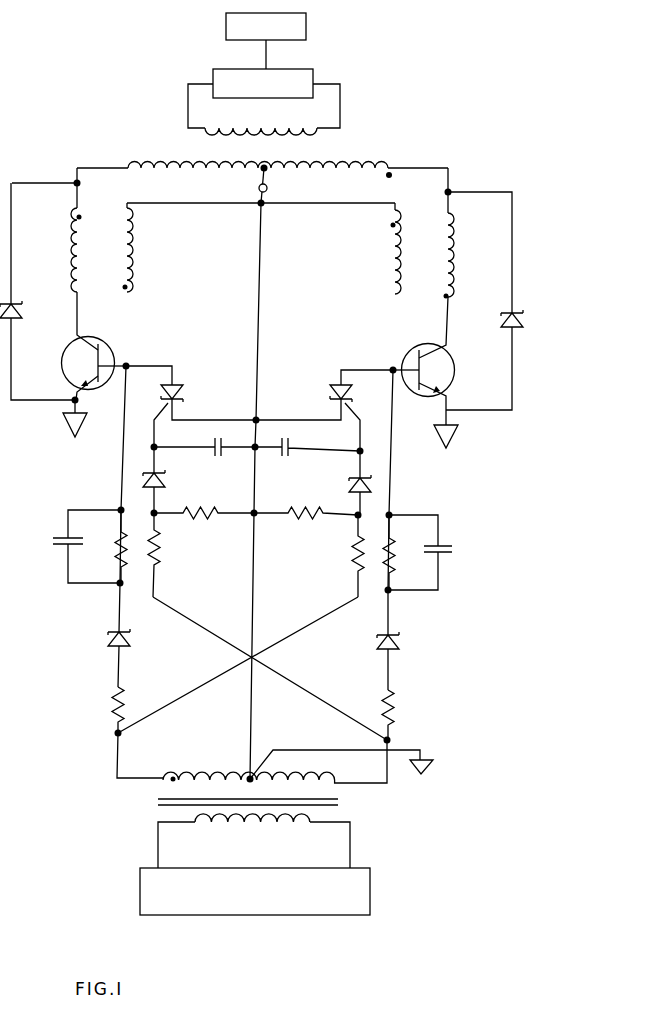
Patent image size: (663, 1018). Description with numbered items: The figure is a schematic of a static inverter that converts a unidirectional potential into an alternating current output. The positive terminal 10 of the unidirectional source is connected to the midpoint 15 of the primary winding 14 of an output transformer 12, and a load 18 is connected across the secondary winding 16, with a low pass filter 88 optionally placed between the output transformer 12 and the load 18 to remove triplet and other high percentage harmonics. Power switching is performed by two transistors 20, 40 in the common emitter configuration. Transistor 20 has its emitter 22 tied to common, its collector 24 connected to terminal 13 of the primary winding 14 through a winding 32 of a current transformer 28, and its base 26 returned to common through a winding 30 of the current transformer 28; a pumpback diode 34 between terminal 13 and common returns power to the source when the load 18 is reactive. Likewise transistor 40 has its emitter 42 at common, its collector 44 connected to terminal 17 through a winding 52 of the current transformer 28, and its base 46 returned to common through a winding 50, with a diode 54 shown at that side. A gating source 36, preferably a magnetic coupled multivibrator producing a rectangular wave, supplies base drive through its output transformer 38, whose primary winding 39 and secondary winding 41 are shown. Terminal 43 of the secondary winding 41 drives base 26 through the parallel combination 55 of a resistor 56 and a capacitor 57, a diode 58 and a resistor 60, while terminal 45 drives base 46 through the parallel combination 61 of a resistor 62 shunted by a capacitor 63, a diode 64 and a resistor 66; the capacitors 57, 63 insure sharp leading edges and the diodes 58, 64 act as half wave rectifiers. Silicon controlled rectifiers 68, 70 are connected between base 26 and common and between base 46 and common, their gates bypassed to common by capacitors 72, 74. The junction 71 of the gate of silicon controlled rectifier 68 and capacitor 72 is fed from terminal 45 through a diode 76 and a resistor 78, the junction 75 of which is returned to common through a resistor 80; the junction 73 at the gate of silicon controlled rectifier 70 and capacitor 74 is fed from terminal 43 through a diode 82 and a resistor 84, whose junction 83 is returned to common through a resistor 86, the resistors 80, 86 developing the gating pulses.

The positive terminal 10 is at (247, 185).
The output transformer 12 is at (262, 156).
The terminal of primary winding 13 is at (128, 163).
The primary winding 14 is at (185, 162).
The midpoint 15 is at (268, 164).
The secondary winding 16 is at (243, 126).
The terminal of primary winding 17 is at (393, 171).
The load 18 is at (306, 30).
The transistor 20 is at (93, 364).
The emitter 22 is at (80, 392).
The collector 24 is at (90, 345).
The base 26 is at (110, 360).
The current transformer 28 is at (261, 233).
The winding 30 is at (133, 242).
The winding 32 is at (70, 236).
The diode 34 is at (22, 312).
The gating source 36 is at (368, 888).
The output transformer of gating source 38 is at (275, 800).
The gating transformer primary winding 39 is at (262, 826).
The transistor 40 is at (425, 372).
The secondary winding 41 is at (268, 784).
The emitter 42 is at (430, 394).
The terminal of secondary winding 43 is at (163, 786).
The collector 44 is at (437, 345).
The terminal of secondary winding 45 is at (338, 787).
The base 46 is at (410, 378).
The winding 50 is at (393, 268).
The winding 52 is at (456, 268).
The zener diode 54 is at (523, 321).
The parallel combination 55 is at (73, 476).
The resistor 56 is at (116, 536).
The capacitor 57 is at (55, 541).
The diode 58 is at (130, 639).
The resistor 60 is at (124, 704).
The parallel combination 61 is at (433, 482).
The resistor 62 is at (394, 558).
The capacitor 63 is at (452, 549).
The diode 64 is at (399, 642).
The resistor 66 is at (394, 710).
The silicon controlled rectifier 68 is at (180, 393).
The silicon controlled rectifier 70 is at (330, 393).
The junction 71 is at (150, 443).
The capacitor 72 is at (218, 458).
The junction 73 is at (356, 447).
The capacitor 74 is at (285, 458).
The junction 75 is at (158, 516).
The diode 76 is at (165, 482).
The resistor 78 is at (158, 552).
The resistor 80 is at (196, 508).
The diode 82 is at (352, 488).
The junction 83 is at (355, 519).
The resistor 84 is at (353, 556).
The resistor 86 is at (314, 508).
The low pass filter 88 is at (308, 82).